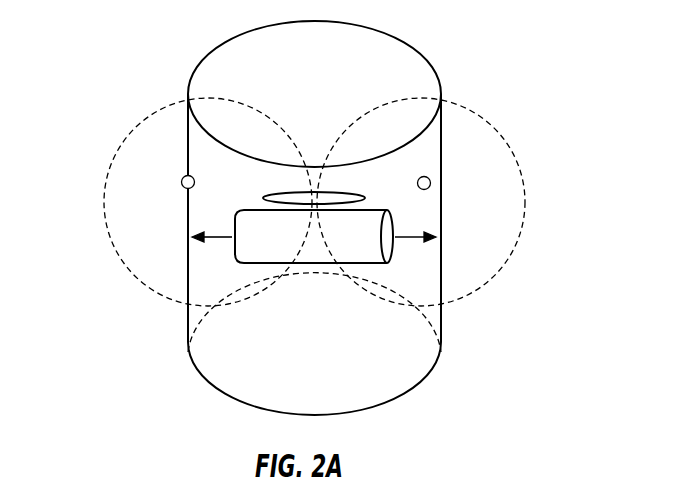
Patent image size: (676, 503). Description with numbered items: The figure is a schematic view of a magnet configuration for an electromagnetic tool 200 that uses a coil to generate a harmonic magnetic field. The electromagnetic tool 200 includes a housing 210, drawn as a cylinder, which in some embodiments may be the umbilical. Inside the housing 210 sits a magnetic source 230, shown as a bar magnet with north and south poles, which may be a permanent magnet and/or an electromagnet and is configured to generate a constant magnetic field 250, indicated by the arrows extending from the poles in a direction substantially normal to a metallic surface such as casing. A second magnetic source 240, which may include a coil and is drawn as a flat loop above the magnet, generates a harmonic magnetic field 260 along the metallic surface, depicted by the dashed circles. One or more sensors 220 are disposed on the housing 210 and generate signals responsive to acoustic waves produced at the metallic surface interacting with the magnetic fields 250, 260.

The electromagnetic tool 200 is at (452, 78).
The housing 210 is at (443, 129).
The sensors 220 is at (181, 182).
The magnetic source 230 is at (390, 209).
The magnetic source 240 is at (280, 196).
The constant magnetic field 250 is at (411, 240).
The harmonic magnetic field 260 is at (498, 273).